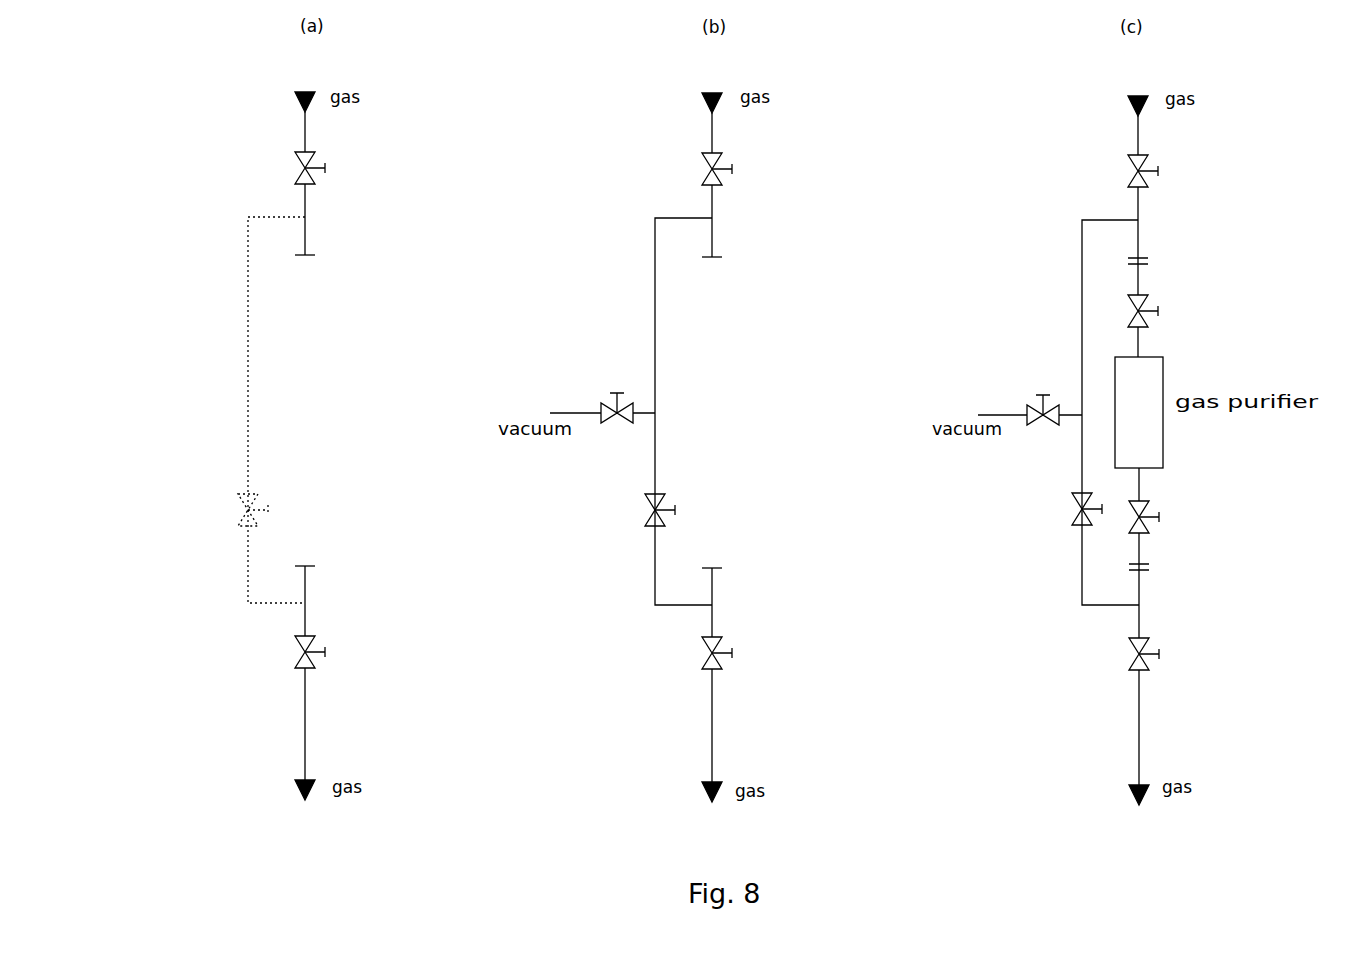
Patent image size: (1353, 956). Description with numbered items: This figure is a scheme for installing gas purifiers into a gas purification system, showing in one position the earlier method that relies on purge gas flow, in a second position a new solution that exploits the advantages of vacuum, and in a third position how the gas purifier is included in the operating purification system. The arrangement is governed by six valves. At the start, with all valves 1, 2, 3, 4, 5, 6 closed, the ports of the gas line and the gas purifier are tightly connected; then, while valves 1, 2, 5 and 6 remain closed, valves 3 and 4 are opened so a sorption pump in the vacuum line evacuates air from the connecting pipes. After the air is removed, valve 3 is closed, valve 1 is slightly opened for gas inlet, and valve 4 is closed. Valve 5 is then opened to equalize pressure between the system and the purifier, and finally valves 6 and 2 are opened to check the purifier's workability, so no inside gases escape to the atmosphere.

The valve 1 is at (736, 160).
The valve 2 is at (737, 650).
The valve 3 is at (661, 500).
The valve 4 is at (821, 404).
The valve 5 is at (1152, 304).
The valve 6 is at (1153, 513).